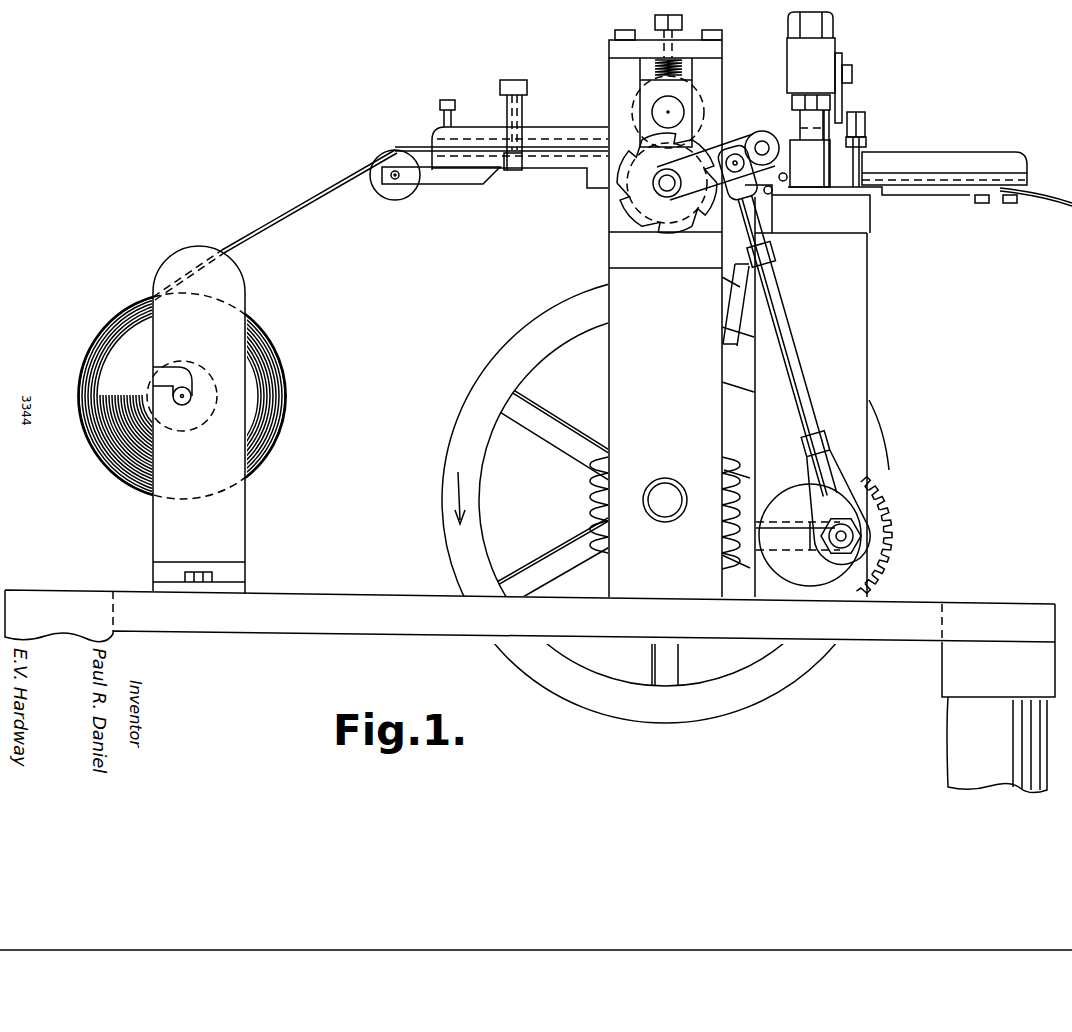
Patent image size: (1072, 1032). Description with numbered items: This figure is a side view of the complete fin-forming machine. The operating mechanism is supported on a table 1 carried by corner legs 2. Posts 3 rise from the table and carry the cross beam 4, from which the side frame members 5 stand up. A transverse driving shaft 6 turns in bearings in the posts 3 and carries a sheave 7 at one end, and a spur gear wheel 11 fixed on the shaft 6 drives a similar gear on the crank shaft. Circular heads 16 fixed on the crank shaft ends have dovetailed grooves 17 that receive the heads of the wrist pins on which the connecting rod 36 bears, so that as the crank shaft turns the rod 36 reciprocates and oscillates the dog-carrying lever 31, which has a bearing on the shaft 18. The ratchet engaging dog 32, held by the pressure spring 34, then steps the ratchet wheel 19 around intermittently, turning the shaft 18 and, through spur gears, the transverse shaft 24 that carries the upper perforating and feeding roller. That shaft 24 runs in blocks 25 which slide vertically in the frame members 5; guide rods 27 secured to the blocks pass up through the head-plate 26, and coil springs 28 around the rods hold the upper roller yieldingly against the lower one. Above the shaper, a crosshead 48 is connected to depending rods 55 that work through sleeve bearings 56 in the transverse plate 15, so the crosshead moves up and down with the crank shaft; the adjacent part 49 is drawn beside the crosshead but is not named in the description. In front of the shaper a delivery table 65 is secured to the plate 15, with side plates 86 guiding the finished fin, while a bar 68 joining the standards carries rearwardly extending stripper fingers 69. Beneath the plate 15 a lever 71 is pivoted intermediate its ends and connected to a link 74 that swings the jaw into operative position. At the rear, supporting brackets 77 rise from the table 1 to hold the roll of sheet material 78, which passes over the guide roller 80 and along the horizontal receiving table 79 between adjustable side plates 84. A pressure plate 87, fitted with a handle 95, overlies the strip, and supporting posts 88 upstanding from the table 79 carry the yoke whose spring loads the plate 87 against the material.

The table 1 is at (364, 600).
The corner legs 2 is at (948, 728).
The posts 3 is at (610, 281).
The cross beam 4 is at (610, 243).
The side frame members 5 is at (610, 95).
The transverse driving shaft 6 is at (680, 515).
The sheave 7 is at (875, 445).
The spur gear wheel 11 is at (592, 497).
The transverse plate 15 is at (868, 225).
The circular heads 16 is at (862, 572).
The dovetailed grooves 17 is at (780, 524).
The shaft 18 is at (652, 185).
The ratchet wheel 19 is at (640, 215).
The transverse shaft 24 is at (674, 111).
The blocks 25 is at (680, 90).
The head-plate 26 is at (610, 48).
The guide rods 27 is at (672, 38).
The coil springs 28 is at (650, 70).
The dog-carrying lever 31 is at (752, 142).
The ratchet engaging dog 32 is at (752, 222).
The pressure spring 34 is at (771, 193).
The connecting rod 36 is at (793, 352).
The crosshead 48 is at (838, 45).
The bracket 49 is at (845, 64).
The rods 55 is at (795, 126).
The sleeve bearings 56 is at (868, 143).
The table 65 is at (938, 190).
The bar 68 is at (866, 128).
The stripper fingers 69 is at (842, 118).
The lever 71 is at (742, 378).
The link 74 is at (740, 305).
The supporting brackets 77 is at (250, 300).
The paper roll 78 is at (272, 355).
The horizontal receiving table 79 is at (530, 170).
The guide roller 80 is at (388, 196).
The side plates 84 is at (484, 127).
The side plates 86 is at (1024, 163).
The pressure plate 87 is at (545, 138).
The supporting posts 88 is at (527, 95).
The handle 95 is at (447, 100).